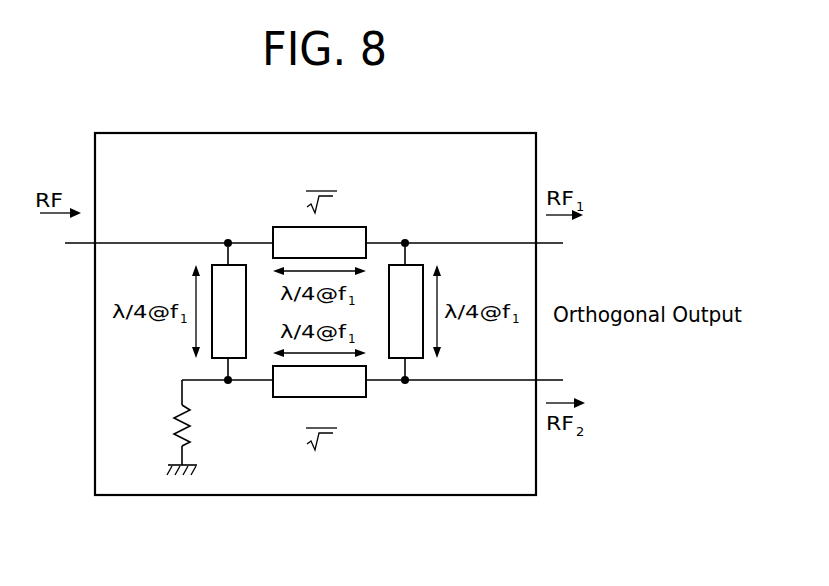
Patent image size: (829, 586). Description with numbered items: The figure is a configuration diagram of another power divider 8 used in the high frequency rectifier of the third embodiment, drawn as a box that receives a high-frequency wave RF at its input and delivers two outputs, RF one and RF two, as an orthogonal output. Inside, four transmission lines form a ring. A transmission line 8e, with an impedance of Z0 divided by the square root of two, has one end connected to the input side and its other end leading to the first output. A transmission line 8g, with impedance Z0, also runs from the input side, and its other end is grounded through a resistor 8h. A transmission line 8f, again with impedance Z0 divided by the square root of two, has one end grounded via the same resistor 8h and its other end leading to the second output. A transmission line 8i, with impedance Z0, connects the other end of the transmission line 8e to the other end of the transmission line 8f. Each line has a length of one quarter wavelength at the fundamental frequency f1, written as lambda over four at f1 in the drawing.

The power divider 8 is at (95, 157).
The transmission line 8e is at (283, 226).
The transmission line 8f is at (273, 397).
The transmission line 8g is at (214, 360).
The resistor 8h is at (176, 440).
The transmission line 8i is at (409, 381).